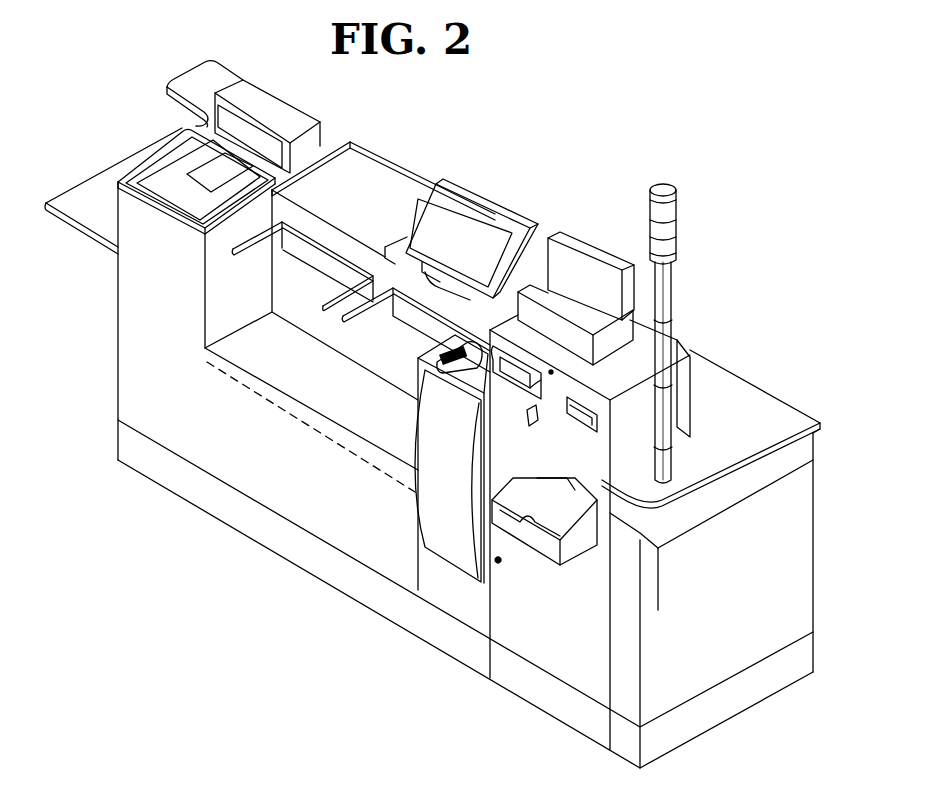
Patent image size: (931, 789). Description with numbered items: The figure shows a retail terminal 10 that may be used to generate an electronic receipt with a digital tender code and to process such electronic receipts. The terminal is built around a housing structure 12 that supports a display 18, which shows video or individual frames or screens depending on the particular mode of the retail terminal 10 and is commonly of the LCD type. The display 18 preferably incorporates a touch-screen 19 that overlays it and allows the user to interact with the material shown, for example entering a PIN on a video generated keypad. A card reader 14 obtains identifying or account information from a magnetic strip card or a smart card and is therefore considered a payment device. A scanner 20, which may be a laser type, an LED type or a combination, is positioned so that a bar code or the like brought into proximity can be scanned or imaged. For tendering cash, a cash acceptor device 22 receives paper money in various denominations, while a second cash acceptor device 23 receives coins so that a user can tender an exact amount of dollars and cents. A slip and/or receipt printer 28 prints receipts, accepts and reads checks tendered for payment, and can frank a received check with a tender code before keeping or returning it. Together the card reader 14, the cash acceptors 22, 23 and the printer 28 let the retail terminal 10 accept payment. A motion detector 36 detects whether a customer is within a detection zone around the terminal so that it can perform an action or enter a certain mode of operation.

The retail terminal 10 is at (603, 86).
The housing structure 12 is at (780, 417).
The card reader 14 is at (581, 407).
The display 18 is at (452, 192).
The touch-screen 19 is at (480, 223).
The scanner 20 is at (160, 129).
The cash acceptor device 22 is at (586, 480).
The cash acceptor device 23 is at (505, 376).
The slip and/or receipt printer 28 is at (575, 248).
The motion detector 36 is at (533, 426).